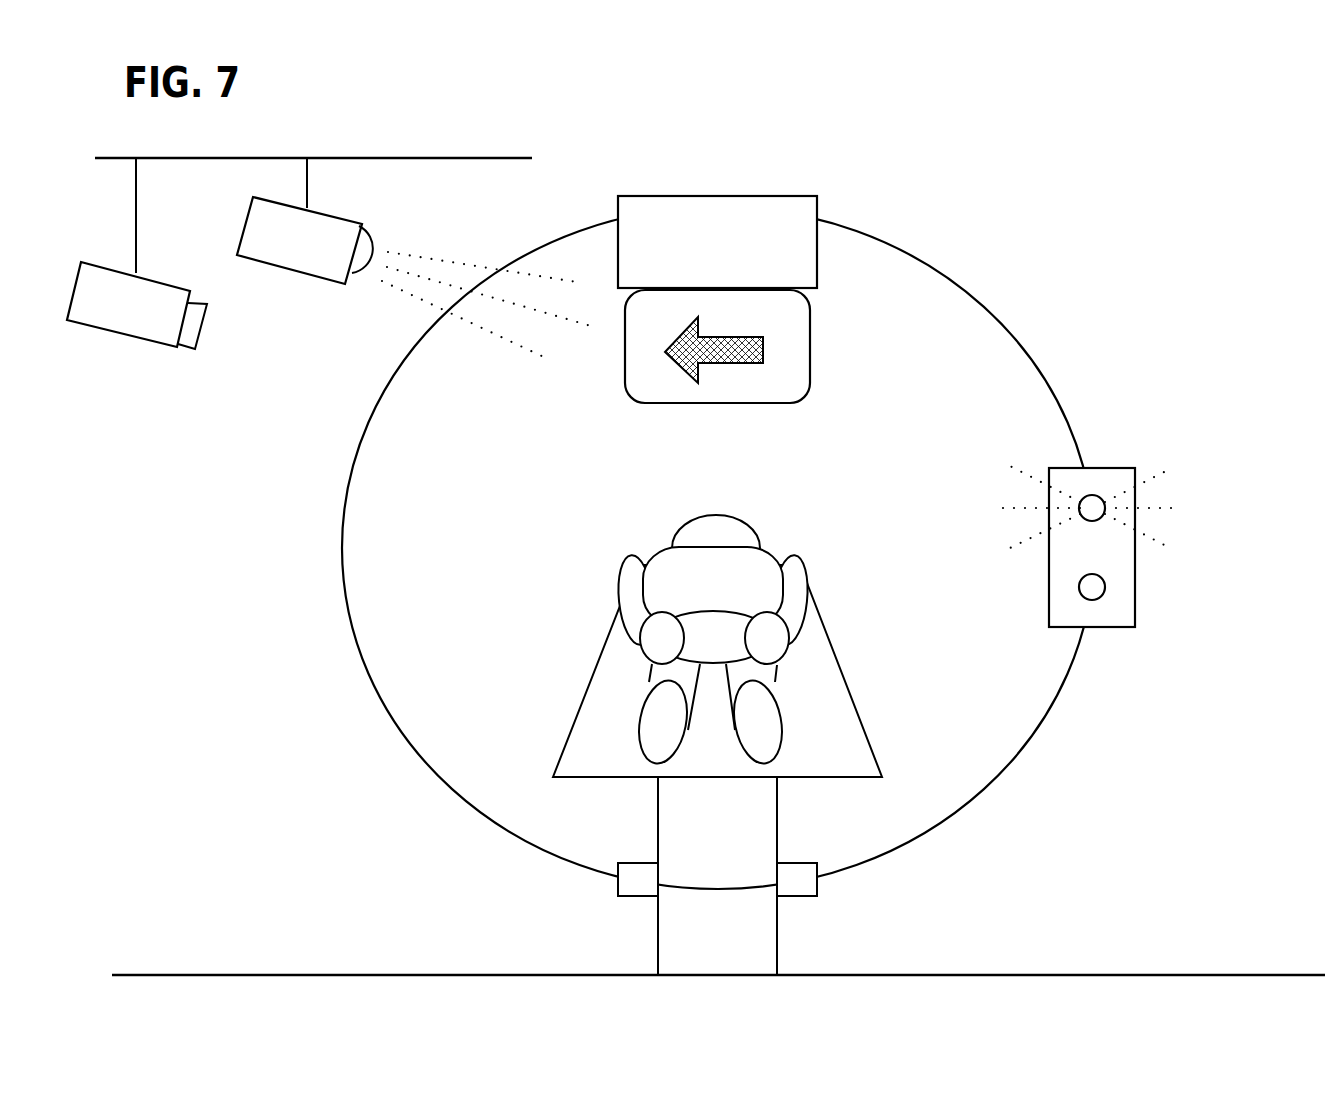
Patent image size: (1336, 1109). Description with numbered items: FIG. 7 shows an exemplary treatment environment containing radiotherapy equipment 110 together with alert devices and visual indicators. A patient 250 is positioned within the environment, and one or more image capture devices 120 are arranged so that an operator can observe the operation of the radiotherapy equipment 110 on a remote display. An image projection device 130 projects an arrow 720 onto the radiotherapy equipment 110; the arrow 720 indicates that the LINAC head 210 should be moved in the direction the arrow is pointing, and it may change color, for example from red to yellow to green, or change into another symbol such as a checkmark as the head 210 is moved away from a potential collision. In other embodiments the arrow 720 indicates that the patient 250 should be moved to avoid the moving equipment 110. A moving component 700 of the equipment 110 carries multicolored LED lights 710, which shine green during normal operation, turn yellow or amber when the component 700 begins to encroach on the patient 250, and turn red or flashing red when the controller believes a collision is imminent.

The radiotherapy equipment 110 is at (763, 153).
The image capture device 120 is at (90, 328).
The image projection device 130 is at (260, 262).
The LINAC head 210 is at (763, 232).
The patient 250 is at (620, 602).
The moving component 700 is at (1141, 572).
The multicolored LED lights 710 is at (1105, 588).
The arrow 720 is at (764, 350).